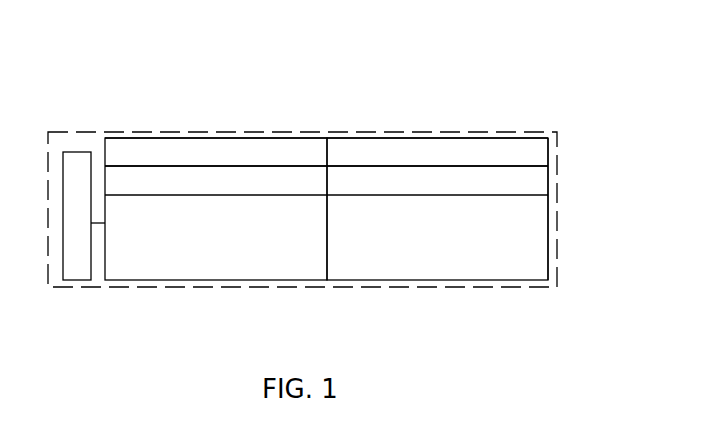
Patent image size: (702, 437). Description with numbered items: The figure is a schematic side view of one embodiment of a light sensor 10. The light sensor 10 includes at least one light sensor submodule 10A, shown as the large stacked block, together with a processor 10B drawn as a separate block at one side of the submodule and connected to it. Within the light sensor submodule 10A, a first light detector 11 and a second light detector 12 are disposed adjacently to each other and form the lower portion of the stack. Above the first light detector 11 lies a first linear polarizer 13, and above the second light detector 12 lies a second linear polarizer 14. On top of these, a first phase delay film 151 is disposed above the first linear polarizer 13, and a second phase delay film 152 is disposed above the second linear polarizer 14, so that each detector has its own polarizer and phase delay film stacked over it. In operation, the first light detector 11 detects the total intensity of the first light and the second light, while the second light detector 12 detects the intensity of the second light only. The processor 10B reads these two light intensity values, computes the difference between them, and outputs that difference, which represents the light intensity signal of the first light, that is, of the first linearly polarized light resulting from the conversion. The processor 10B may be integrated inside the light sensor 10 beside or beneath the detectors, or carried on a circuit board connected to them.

The light sensor 10 is at (397, 132).
The light sensor submodule 10A is at (550, 221).
The processor 10B is at (83, 175).
The first light detector 11 is at (252, 252).
The second light detector 12 is at (418, 260).
The first linear polarizer 13 is at (223, 180).
The second linear polarizer 14 is at (363, 176).
The first phase delay film 151 is at (265, 146).
The second phase delay film 152 is at (438, 152).